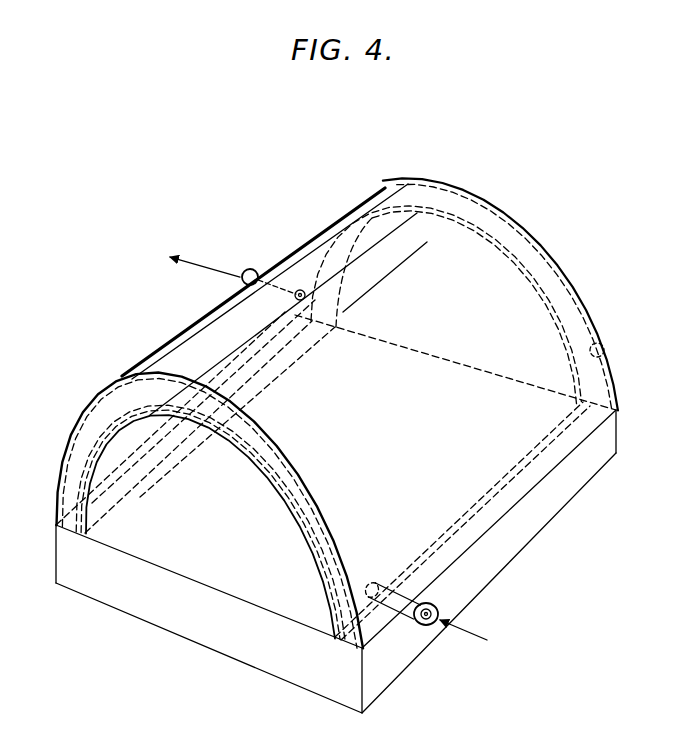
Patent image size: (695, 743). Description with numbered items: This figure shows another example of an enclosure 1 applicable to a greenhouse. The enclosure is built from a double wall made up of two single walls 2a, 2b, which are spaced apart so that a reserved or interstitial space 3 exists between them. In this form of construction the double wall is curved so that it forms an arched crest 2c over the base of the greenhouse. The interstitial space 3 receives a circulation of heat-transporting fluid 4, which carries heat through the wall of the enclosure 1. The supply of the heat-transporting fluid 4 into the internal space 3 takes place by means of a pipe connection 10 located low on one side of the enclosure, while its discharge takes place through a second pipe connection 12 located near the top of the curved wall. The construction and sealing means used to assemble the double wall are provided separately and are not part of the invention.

The enclosure 1 is at (164, 303).
The single wall 2a is at (85, 420).
The single wall 2b is at (88, 513).
The crest 2c is at (437, 181).
The interstitial space 3 is at (606, 351).
The heat-transporting fluid 4 is at (543, 272).
The pipe connection 10 is at (405, 625).
The pipe connection 12 is at (252, 268).